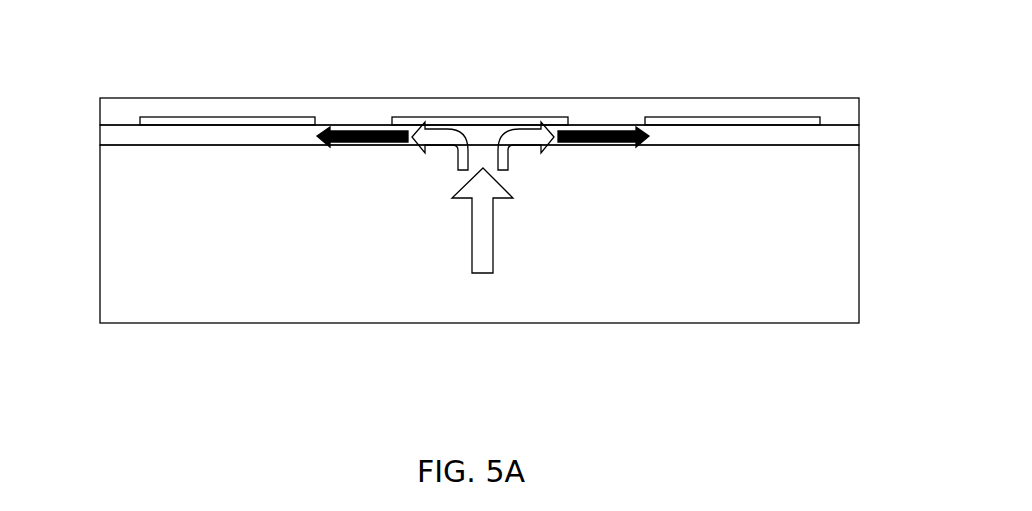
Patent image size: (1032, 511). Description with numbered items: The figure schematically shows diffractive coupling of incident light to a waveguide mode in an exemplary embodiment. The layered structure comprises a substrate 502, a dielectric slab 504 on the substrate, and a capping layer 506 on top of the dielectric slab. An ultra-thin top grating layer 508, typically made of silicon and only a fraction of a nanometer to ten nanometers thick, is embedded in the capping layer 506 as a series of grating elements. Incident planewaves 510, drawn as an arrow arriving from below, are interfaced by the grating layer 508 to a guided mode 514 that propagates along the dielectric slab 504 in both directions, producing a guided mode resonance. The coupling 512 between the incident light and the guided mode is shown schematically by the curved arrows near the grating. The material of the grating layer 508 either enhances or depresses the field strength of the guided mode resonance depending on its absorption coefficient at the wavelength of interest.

The substrate 502 is at (226, 246).
The dielectric slab 504 is at (859, 137).
The capping layer 506 is at (105, 112).
The top grating layer 508 is at (177, 120).
The incident planewaves 510 is at (480, 265).
The coupling 512 is at (524, 167).
The guided mode 514 is at (357, 122).